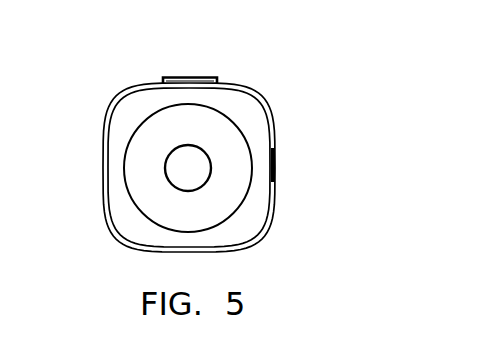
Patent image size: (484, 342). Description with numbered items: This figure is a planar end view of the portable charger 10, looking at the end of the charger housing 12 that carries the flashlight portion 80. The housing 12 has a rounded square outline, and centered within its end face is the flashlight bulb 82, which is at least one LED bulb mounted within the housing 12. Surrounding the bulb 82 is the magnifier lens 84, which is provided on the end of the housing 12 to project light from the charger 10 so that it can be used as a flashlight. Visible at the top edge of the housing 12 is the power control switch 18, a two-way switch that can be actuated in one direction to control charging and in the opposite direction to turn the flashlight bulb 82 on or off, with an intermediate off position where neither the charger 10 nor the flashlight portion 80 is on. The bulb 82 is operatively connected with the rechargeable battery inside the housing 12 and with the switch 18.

The portable charger 10 is at (300, 66).
The charger housing 12 is at (104, 111).
The power control switch 18 is at (167, 77).
The flashlight portion 80 is at (75, 181).
The flashlight bulb 82 is at (194, 163).
The magnifier lens 84 is at (229, 192).